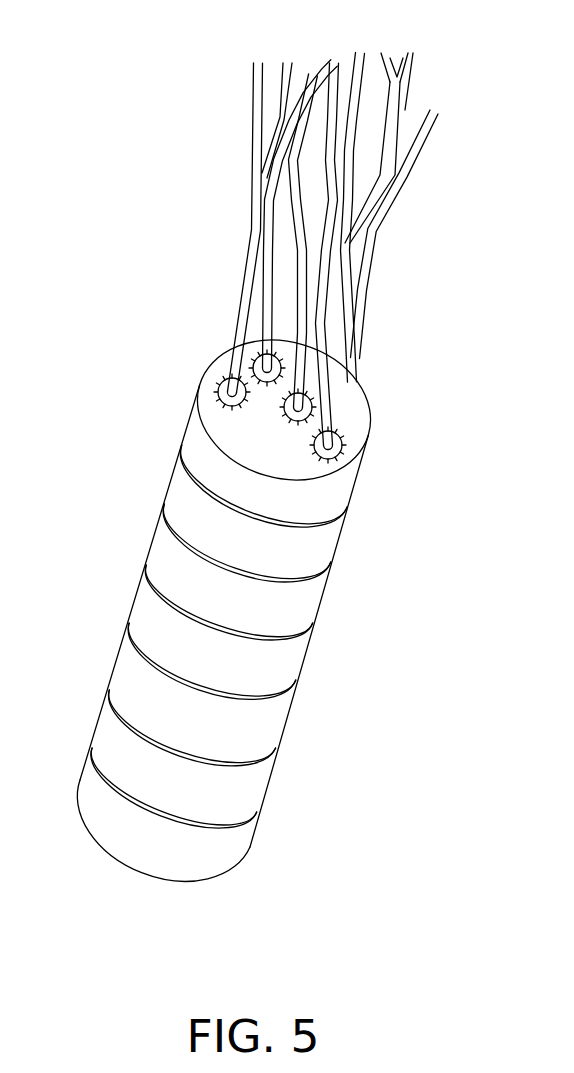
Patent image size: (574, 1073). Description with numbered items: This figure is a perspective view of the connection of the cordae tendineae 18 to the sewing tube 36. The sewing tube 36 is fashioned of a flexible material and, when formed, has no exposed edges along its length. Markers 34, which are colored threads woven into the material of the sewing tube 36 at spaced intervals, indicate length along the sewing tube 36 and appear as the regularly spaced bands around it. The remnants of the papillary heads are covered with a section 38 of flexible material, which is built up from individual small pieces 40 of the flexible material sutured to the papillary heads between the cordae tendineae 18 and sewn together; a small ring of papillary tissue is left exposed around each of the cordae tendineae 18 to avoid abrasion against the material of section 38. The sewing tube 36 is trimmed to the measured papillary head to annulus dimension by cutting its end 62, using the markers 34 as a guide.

The cordae tendineae 18 is at (294, 240).
The markers 34 is at (350, 507).
The sewing tube 36 is at (143, 620).
The section of flexible material 38 is at (277, 450).
The small pieces of flexible material 40 is at (225, 357).
The end of sewing tube 62 is at (249, 614).